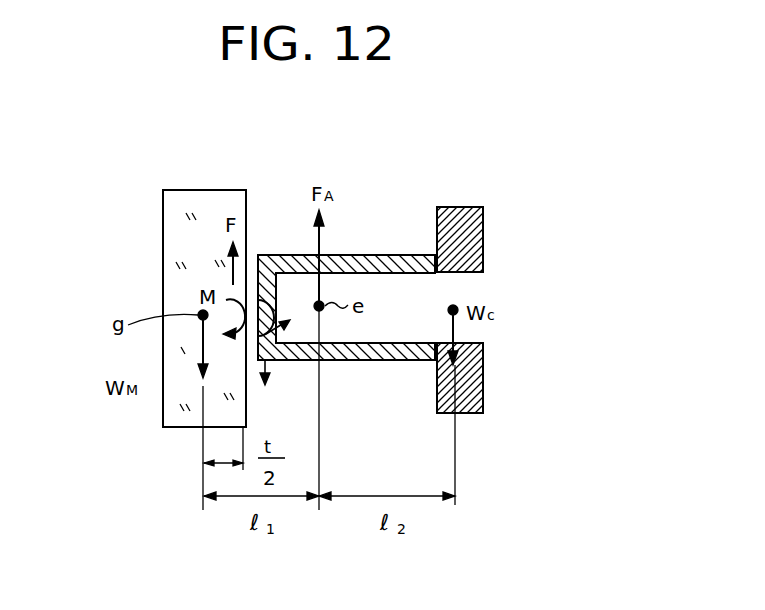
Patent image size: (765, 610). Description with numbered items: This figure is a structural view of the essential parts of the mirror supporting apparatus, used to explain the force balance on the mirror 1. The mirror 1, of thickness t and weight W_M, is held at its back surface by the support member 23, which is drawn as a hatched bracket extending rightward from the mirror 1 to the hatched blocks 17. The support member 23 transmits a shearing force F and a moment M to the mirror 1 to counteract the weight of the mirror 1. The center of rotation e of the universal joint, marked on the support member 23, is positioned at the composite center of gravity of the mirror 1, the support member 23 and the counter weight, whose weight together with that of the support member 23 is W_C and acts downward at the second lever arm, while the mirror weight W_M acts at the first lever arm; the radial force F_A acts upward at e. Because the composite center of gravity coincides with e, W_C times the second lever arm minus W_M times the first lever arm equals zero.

The mirror 1 is at (172, 253).
The coil 17 is at (483, 235).
The support member 23 is at (380, 360).